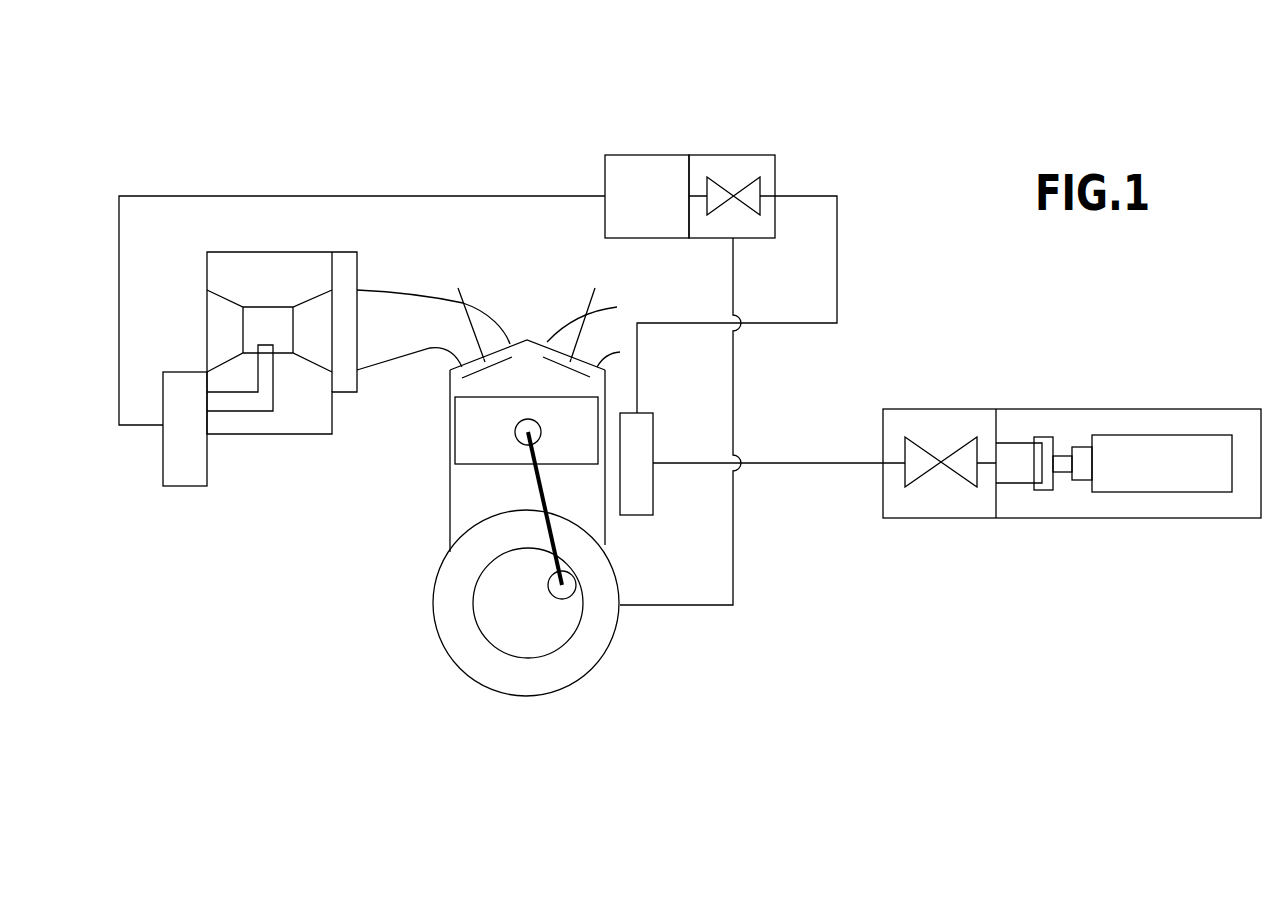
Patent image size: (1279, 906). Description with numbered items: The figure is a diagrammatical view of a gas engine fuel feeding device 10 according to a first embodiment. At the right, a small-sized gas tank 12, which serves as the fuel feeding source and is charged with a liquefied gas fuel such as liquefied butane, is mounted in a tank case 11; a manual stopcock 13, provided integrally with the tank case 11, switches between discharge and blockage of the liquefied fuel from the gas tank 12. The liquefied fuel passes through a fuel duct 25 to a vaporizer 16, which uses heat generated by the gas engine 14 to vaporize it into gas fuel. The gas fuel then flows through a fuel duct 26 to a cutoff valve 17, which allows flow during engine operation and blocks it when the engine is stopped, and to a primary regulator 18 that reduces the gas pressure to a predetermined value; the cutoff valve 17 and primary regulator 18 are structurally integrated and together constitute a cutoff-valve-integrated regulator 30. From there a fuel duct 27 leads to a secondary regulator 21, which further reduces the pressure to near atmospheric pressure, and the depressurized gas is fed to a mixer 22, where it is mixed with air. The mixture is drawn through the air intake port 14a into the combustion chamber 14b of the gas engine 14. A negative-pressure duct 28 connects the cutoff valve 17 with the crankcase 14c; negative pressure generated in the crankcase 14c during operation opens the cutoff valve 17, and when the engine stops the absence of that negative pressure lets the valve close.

The fuel feeding device 10 is at (393, 185).
The tank case 11 is at (1097, 512).
The small-sized gas tank 12 is at (1147, 452).
The manual stopcock 13 is at (955, 480).
The gas engine 14 is at (448, 523).
The air intake port 14a is at (416, 300).
The combustion chamber 14b is at (470, 387).
The crankcase 14c is at (557, 695).
The vaporizer 16 is at (638, 507).
The cutoff valve 17 is at (732, 149).
The primary regulator 18 is at (642, 167).
The secondary regulator 21 is at (185, 475).
The mixer 22 is at (287, 423).
The fuel duct 25 is at (807, 465).
The fuel duct 26 is at (838, 260).
The fuel duct 27 is at (245, 195).
The negative-pressure duct 28 is at (735, 387).
The cutoff-valve-integrated regulator 30 is at (690, 123).